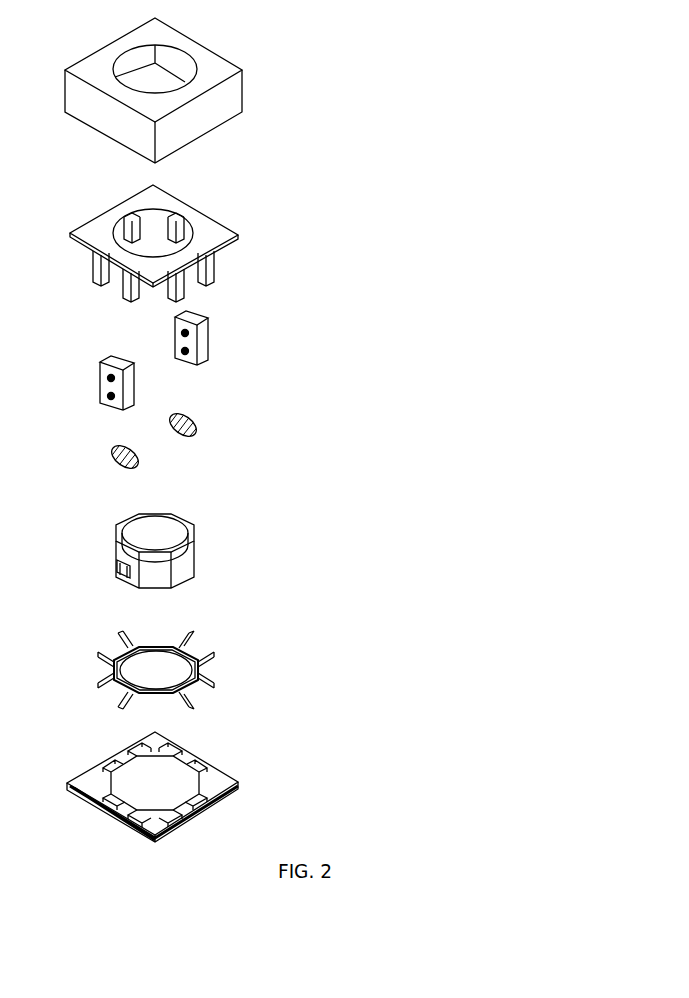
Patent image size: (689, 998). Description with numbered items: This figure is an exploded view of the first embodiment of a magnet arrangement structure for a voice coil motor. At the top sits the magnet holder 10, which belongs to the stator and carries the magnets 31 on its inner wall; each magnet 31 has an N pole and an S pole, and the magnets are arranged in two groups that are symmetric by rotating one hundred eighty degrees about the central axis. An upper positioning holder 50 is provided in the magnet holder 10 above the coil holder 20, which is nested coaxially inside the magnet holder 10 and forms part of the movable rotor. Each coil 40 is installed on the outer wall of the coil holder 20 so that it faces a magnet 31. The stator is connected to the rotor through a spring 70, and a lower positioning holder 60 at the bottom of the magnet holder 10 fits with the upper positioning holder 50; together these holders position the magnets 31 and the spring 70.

The magnet holder 10 is at (255, 80).
The upper positioning holder 50 is at (233, 213).
The magnet 31 is at (213, 325).
The coil 40 is at (200, 412).
The coil holder 20 is at (205, 548).
The spring 70 is at (207, 660).
The lower positioning holder 60 is at (240, 780).